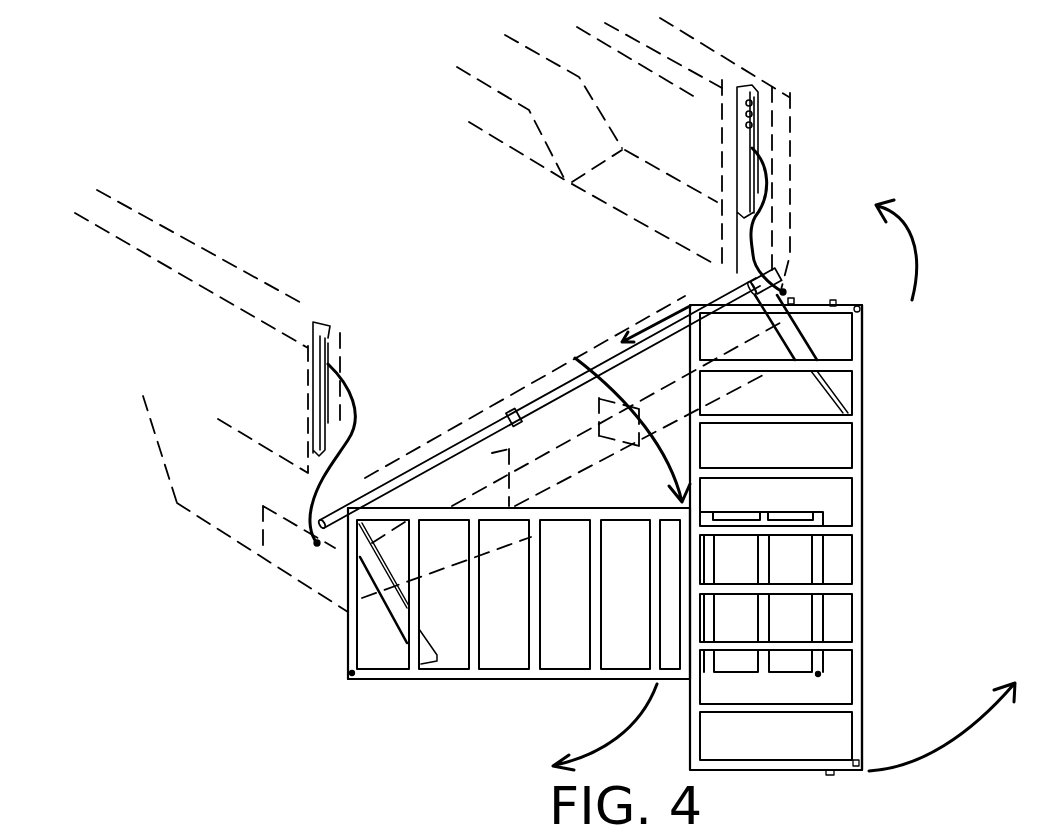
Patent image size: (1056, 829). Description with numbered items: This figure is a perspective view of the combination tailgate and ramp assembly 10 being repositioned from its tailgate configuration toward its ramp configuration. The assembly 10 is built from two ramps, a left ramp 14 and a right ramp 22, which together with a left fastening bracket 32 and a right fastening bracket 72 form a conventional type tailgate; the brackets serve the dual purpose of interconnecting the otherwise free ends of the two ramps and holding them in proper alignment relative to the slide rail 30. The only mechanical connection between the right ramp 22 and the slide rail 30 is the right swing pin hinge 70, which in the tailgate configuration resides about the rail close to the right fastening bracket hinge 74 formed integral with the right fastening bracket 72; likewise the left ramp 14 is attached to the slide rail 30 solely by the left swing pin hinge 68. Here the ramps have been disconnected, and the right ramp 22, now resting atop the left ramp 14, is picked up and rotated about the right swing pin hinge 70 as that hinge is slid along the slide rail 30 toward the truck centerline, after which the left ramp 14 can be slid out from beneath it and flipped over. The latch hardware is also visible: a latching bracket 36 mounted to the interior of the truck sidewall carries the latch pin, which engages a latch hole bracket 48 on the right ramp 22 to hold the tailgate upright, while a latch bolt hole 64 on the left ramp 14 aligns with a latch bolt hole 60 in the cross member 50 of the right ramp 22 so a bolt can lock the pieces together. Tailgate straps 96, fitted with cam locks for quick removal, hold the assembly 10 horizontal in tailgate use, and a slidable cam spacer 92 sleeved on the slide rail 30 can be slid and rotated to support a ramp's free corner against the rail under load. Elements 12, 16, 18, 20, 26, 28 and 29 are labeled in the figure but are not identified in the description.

The combination tailgate and ramp assembly 10 is at (980, 533).
The vehicle bed 12 is at (785, 139).
The left ramp 14 is at (389, 681).
The bottom frame member 16 is at (509, 681).
The top frame member 18 is at (626, 512).
The openings 20 is at (481, 610).
The right ramp 22 is at (860, 448).
The cross member 26 is at (692, 389).
The cross member 28 is at (787, 466).
The side frame member 29 is at (866, 378).
The slide rail 30 is at (455, 447).
The left fastening bracket 32 is at (390, 613).
The latching bracket 36 is at (741, 132).
The latch hole bracket 48 is at (855, 299).
The cross member 50 is at (822, 315).
The latch bolt hole 60 is at (862, 309).
The latch bolt hole 64 is at (352, 675).
The left swing pin hinge 68 is at (358, 499).
The right swing pin hinge 70 is at (684, 312).
The right fastening bracket 72 is at (798, 303).
The right fastening bracket hinge 74 is at (748, 285).
The slidable cam spacer 92 is at (510, 413).
The tailgate strap 96 is at (768, 191).